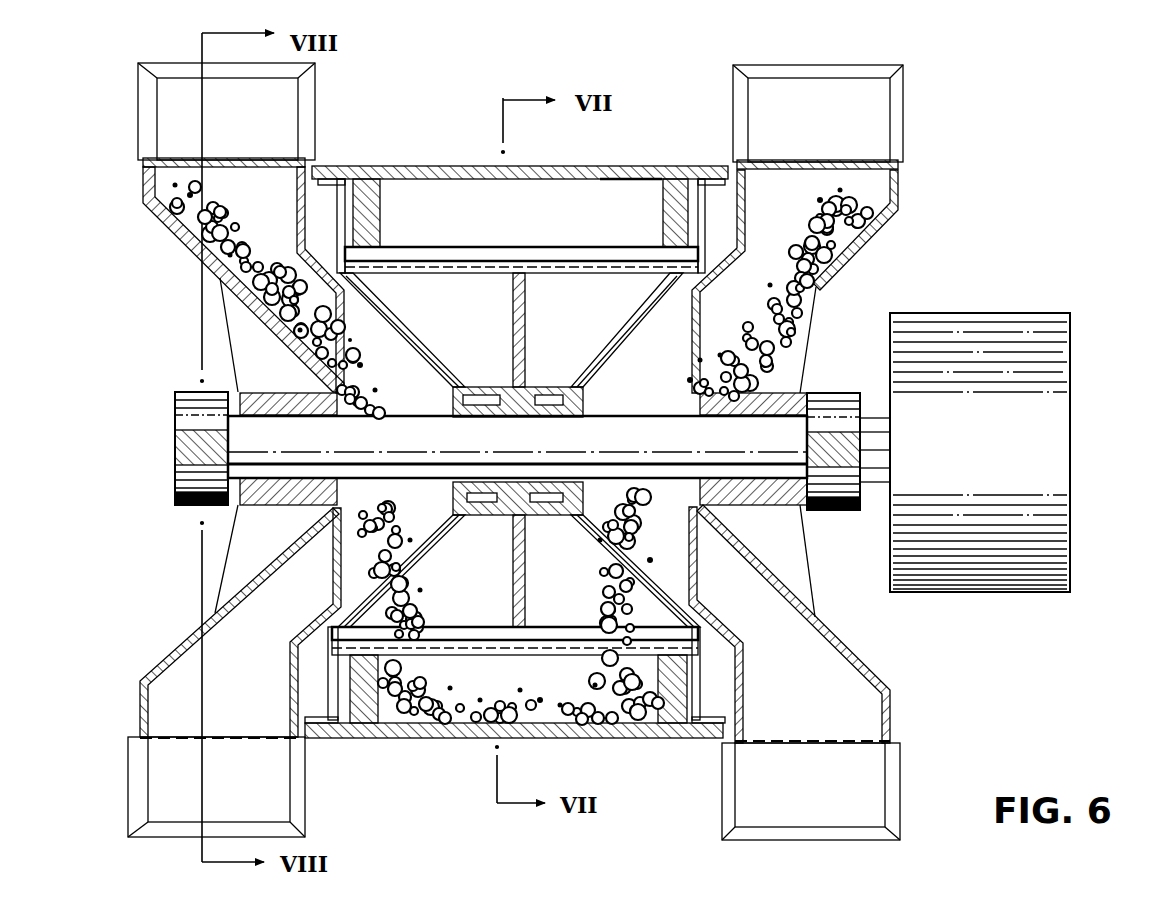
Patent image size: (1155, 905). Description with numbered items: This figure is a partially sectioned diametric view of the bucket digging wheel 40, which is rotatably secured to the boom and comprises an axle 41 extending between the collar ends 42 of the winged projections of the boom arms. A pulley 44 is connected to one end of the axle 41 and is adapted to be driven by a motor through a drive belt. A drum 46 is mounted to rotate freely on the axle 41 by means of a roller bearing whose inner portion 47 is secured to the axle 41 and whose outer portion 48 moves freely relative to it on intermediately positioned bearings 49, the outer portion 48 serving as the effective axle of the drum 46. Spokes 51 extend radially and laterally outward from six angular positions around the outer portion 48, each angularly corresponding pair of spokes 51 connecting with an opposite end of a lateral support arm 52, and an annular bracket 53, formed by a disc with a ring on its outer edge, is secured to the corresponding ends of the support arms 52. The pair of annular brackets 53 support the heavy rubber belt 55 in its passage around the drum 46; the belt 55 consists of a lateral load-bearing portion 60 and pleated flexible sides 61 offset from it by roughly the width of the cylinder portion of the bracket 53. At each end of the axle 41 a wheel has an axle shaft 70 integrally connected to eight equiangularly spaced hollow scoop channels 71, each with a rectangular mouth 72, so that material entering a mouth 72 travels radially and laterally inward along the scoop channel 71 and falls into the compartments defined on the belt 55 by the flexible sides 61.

The bucket digging wheel 40 is at (226, 228).
The axle 41 is at (497, 455).
The collar end 42 is at (180, 421).
The pulley 44 is at (1033, 453).
The drum 46 is at (591, 240).
The inner portion of roller bearing 47 is at (583, 412).
The outer portion of roller bearing 48 is at (548, 387).
The bearings 49 is at (480, 387).
The spokes 51 is at (414, 338).
The lateral support arm 52 is at (438, 248).
The annular bracket 53 is at (338, 212).
The belt 55 is at (520, 149).
The load-bearing portion 60 is at (631, 149).
The pleated flexible sides 61 is at (662, 210).
The axle shaft 70 is at (270, 393).
The scoop channel 71 is at (868, 190).
The rectangular mouth 72 is at (877, 113).